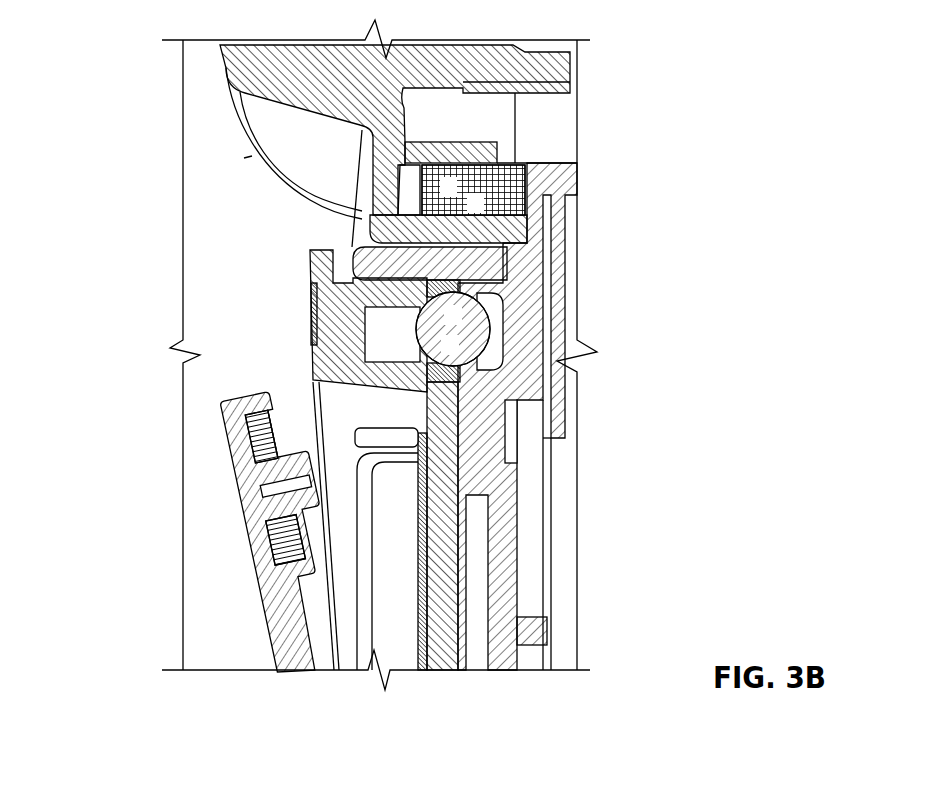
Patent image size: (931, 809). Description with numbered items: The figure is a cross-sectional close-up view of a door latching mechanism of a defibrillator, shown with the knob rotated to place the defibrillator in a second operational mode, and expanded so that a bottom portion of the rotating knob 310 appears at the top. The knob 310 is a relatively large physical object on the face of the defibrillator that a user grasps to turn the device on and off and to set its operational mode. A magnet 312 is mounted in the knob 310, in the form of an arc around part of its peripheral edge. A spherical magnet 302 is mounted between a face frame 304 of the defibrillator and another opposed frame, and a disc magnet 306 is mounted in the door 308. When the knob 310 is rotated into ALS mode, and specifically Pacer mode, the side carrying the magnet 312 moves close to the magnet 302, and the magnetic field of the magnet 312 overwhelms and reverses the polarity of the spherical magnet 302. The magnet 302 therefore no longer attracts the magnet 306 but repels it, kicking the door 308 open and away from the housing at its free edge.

The spherical magnet 302 is at (472, 338).
The face frame 304 is at (442, 448).
The disc magnet 306 is at (258, 452).
The door 308 is at (260, 513).
The rotating knob 310 is at (462, 232).
The magnet 312 is at (540, 203).